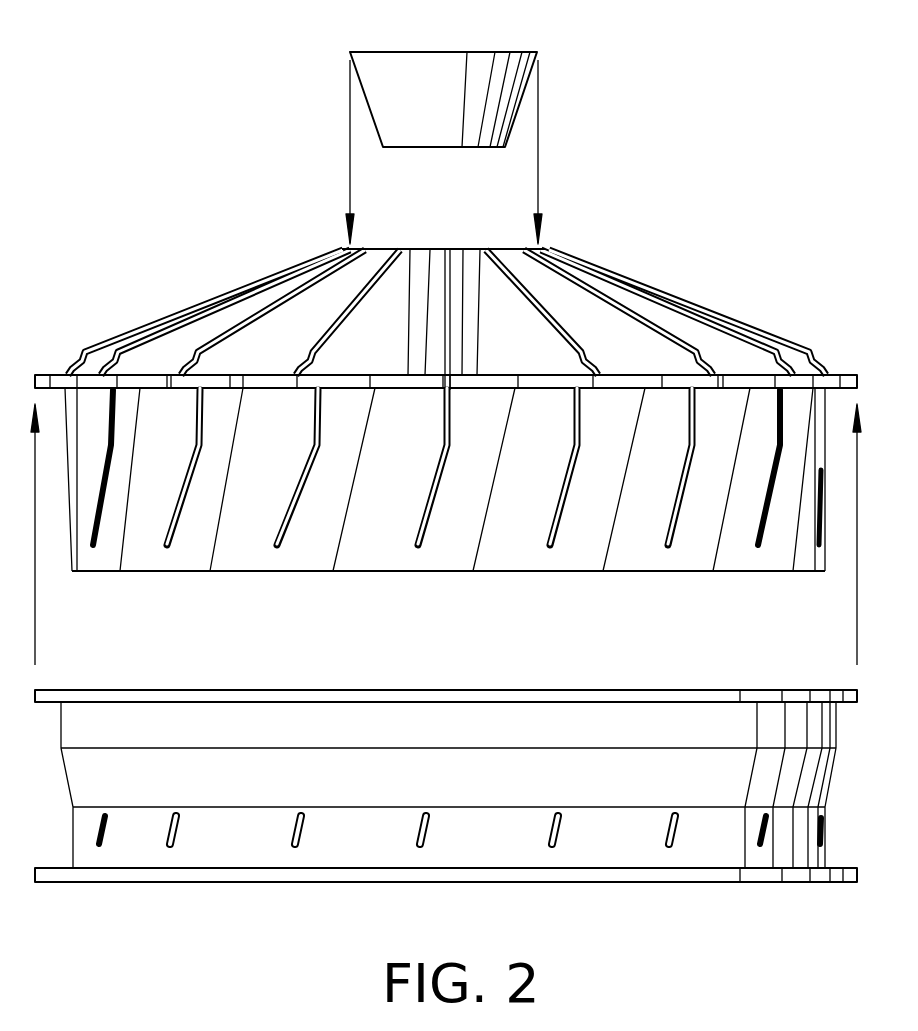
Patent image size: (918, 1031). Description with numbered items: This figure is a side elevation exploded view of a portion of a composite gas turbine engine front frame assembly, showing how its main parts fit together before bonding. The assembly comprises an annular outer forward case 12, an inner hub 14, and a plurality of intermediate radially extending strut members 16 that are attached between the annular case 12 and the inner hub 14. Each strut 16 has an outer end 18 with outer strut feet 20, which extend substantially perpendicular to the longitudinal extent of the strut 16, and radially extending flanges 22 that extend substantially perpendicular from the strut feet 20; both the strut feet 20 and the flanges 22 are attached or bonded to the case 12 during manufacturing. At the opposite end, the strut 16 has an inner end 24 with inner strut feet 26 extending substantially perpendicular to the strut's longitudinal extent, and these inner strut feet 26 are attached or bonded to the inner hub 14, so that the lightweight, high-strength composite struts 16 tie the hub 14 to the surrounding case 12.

The annular outer forward case 12 is at (437, 690).
The inner hub 14 is at (504, 51).
The strut member 16 is at (539, 306).
The outer end 18 is at (392, 571).
The outer strut feet 20 is at (415, 483).
The radially extending flanges 22 is at (335, 375).
The inner end 24 is at (435, 249).
The inner strut feet 26 is at (457, 249).